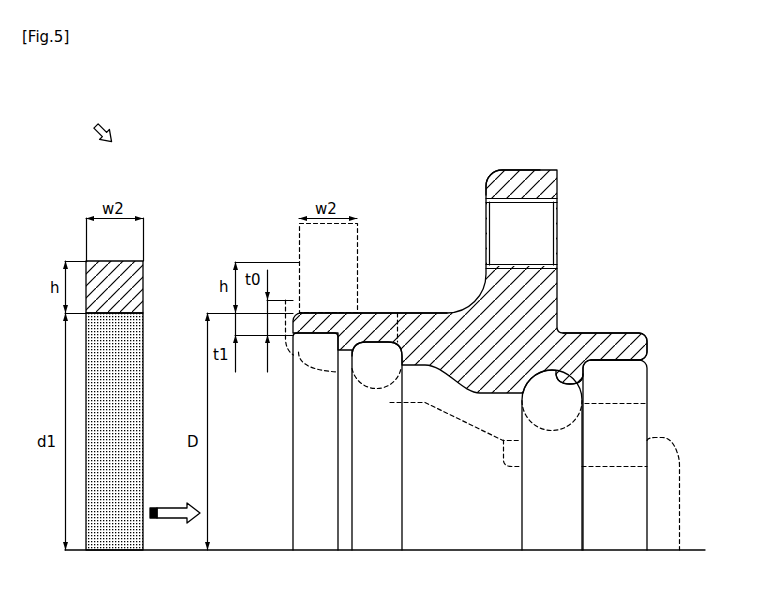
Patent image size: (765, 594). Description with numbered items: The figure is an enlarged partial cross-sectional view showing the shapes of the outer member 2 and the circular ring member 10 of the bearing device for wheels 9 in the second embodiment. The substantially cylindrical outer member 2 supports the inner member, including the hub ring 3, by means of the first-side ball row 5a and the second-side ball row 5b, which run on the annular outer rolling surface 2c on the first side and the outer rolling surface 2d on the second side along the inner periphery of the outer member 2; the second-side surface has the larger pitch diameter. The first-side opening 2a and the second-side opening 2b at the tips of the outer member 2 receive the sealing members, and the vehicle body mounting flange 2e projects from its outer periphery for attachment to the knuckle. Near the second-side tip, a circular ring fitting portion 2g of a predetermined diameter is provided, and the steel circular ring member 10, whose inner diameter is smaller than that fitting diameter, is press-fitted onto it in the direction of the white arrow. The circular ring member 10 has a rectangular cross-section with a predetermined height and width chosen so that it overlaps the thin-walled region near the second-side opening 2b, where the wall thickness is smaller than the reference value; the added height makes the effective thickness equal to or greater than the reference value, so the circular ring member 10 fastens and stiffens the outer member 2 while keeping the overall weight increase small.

The outer member 2 is at (554, 143).
The first-side opening 2a is at (652, 364).
The second-side opening 2b is at (298, 352).
The outer rolling surface on the first side 2c is at (568, 372).
The outer rolling surface on the second side 2d is at (398, 312).
The vehicle body mounting flange 2e is at (526, 178).
The circular ring fitting portion 2g is at (350, 312).
The hub ring 3 is at (677, 415).
The first-side ball row 5a is at (552, 460).
The second-side ball row 5b is at (377, 446).
The bearing device for wheels 9 is at (99, 128).
The circular ring member 10 is at (134, 262).